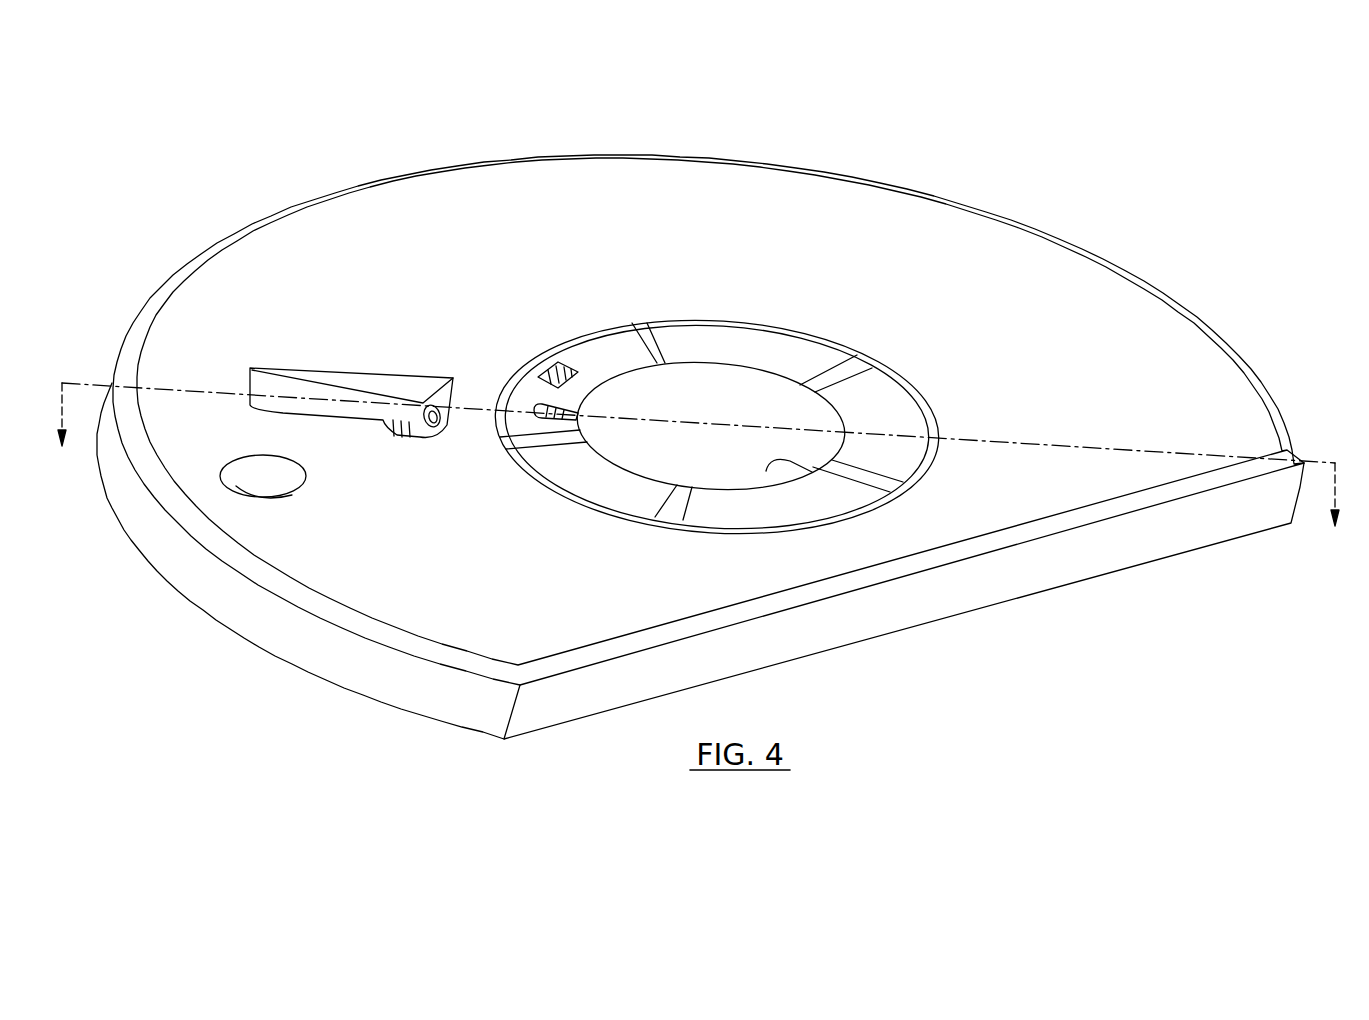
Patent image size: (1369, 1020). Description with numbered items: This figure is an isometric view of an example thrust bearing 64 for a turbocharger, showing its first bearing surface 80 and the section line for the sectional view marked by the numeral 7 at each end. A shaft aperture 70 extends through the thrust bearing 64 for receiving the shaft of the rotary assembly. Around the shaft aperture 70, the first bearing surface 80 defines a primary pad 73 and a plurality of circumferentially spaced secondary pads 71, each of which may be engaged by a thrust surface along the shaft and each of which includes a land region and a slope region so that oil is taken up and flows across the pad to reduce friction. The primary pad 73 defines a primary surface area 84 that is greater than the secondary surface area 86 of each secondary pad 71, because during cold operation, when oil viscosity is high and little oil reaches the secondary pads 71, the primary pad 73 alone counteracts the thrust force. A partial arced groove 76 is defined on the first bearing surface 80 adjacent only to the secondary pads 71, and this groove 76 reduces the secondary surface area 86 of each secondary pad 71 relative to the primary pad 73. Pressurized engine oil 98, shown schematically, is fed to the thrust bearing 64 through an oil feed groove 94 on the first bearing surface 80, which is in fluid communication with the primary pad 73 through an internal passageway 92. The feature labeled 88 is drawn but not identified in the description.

The thrust bearing 64 is at (1134, 157).
The first bearing surface 80 is at (1140, 360).
The partial arced groove 76 is at (938, 428).
The primary pad 73 is at (612, 358).
The primary surface area 84 is at (717, 427).
The shaft aperture 70 is at (840, 480).
The secondary pads 71 is at (723, 420).
The secondary surface area 86 is at (752, 340).
The slot 88 is at (545, 410).
The engine oil 98 is at (553, 368).
The oil feed groove 94 is at (291, 393).
The internal passageway 92 is at (433, 416).
The section line 7 is at (697, 470).